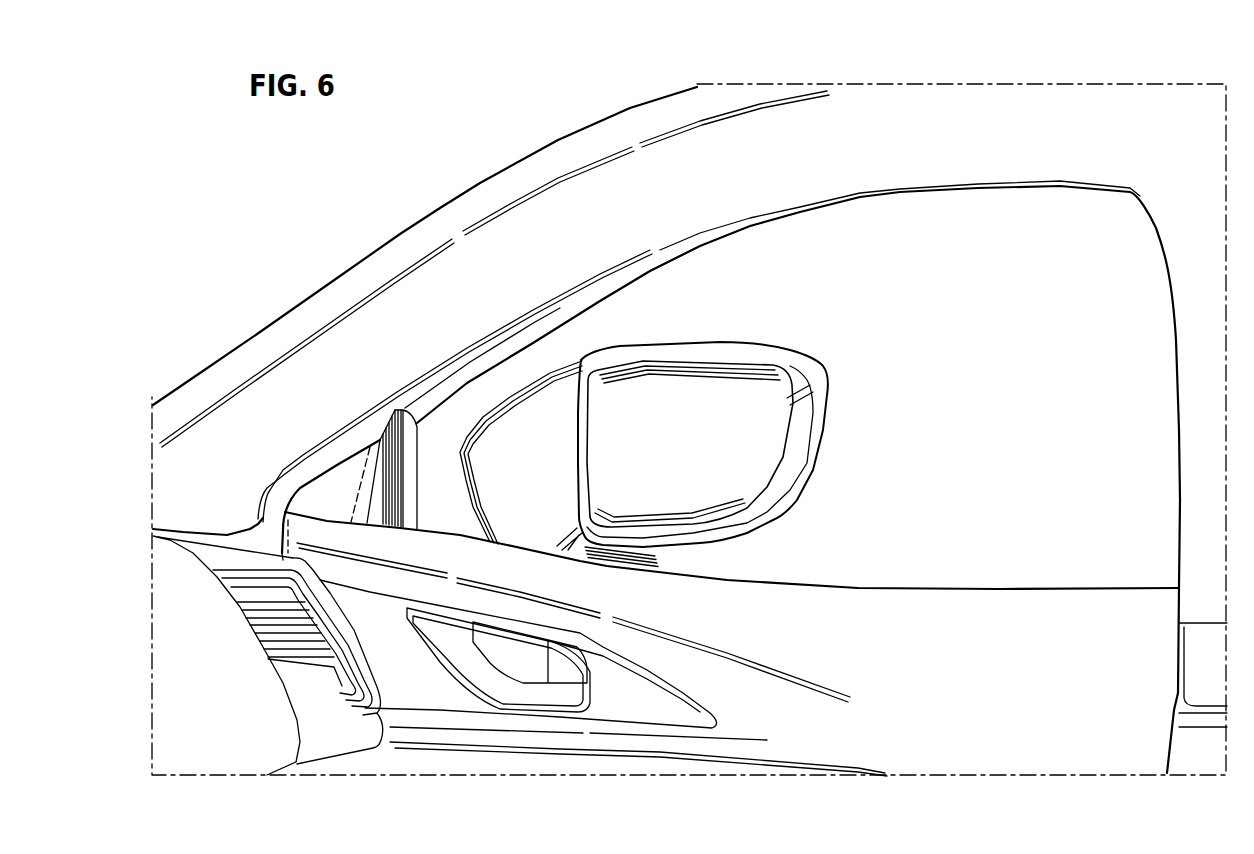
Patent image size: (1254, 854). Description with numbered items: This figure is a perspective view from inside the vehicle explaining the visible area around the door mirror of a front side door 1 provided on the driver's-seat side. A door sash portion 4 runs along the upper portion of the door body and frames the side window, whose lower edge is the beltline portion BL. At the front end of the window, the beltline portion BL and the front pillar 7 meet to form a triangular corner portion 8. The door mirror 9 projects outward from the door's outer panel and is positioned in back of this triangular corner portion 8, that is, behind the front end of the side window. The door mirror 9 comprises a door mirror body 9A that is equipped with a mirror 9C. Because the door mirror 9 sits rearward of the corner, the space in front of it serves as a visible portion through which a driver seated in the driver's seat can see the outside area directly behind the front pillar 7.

The front side door 1 is at (1061, 574).
The door sash portion 4 is at (960, 192).
The front pillar 7 is at (357, 260).
The triangular corner portion 8 is at (338, 487).
The door mirror 9 is at (737, 338).
The door mirror body 9A is at (500, 437).
The mirror 9C is at (690, 456).
The beltline portion BL is at (893, 579).